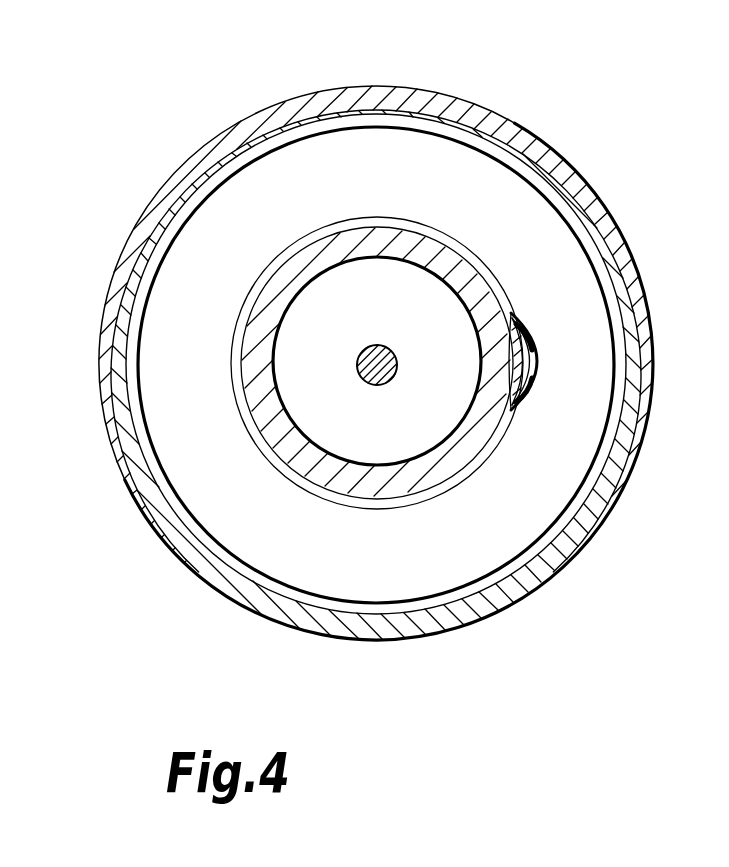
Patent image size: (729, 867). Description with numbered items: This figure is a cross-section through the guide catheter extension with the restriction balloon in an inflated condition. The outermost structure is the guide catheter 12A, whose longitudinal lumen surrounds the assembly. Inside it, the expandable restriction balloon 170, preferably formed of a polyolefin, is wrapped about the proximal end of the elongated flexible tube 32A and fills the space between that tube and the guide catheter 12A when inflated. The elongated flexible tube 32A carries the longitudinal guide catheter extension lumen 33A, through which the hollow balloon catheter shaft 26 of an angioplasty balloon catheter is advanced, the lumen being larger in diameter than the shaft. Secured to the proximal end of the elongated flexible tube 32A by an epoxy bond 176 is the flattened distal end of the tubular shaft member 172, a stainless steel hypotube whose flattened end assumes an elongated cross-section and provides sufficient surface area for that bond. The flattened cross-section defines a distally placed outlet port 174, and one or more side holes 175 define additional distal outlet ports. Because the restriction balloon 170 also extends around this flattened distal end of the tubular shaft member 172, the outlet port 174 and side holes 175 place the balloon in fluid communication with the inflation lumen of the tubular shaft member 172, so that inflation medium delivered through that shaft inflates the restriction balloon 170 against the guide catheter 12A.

The guide catheter 12A is at (235, 125).
The restriction balloon 170 is at (348, 118).
The elongated flexible tube 32A is at (390, 238).
The guide catheter extension lumen 33A is at (336, 341).
The hollow balloon catheter shaft 26 is at (387, 346).
The outlet port 174 is at (537, 334).
The side holes 175 is at (537, 359).
The tubular shaft member 172 is at (522, 393).
The epoxy bond 176 is at (515, 412).